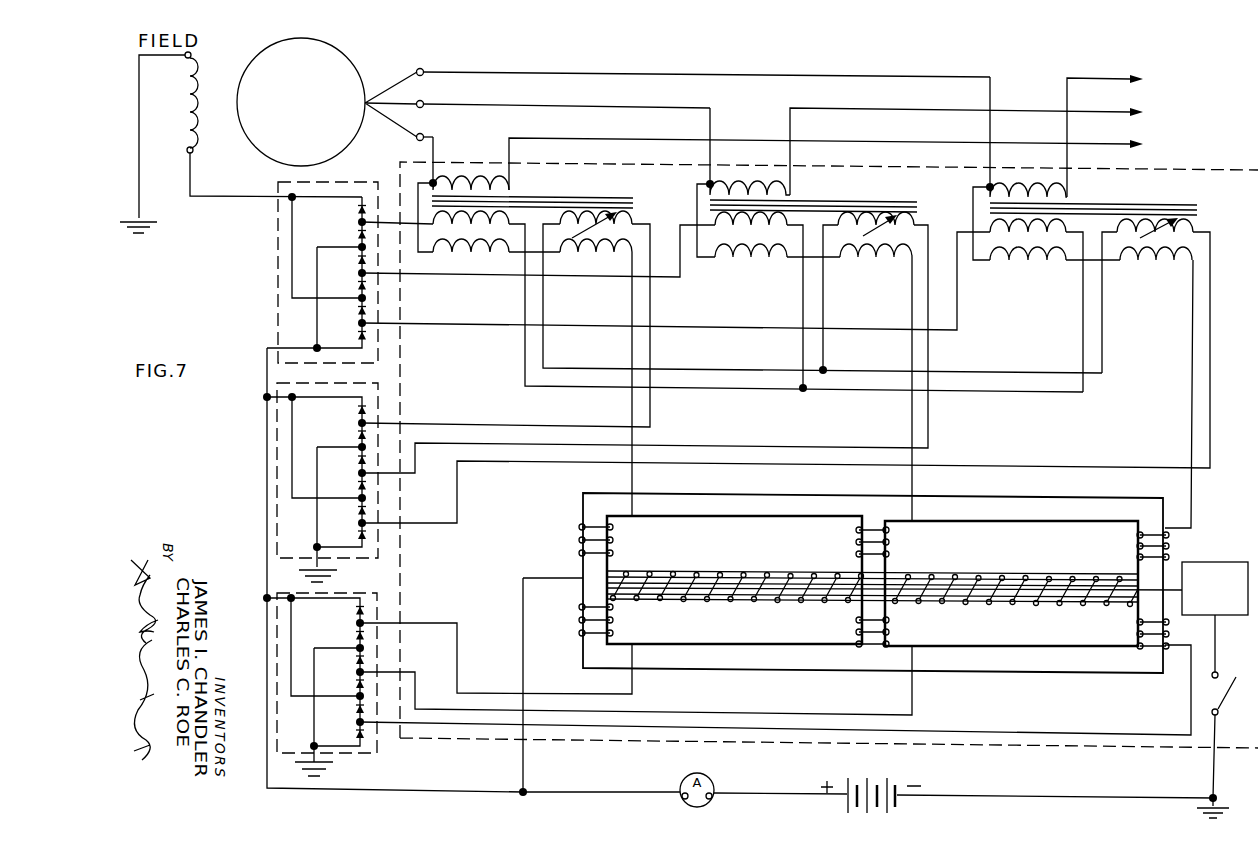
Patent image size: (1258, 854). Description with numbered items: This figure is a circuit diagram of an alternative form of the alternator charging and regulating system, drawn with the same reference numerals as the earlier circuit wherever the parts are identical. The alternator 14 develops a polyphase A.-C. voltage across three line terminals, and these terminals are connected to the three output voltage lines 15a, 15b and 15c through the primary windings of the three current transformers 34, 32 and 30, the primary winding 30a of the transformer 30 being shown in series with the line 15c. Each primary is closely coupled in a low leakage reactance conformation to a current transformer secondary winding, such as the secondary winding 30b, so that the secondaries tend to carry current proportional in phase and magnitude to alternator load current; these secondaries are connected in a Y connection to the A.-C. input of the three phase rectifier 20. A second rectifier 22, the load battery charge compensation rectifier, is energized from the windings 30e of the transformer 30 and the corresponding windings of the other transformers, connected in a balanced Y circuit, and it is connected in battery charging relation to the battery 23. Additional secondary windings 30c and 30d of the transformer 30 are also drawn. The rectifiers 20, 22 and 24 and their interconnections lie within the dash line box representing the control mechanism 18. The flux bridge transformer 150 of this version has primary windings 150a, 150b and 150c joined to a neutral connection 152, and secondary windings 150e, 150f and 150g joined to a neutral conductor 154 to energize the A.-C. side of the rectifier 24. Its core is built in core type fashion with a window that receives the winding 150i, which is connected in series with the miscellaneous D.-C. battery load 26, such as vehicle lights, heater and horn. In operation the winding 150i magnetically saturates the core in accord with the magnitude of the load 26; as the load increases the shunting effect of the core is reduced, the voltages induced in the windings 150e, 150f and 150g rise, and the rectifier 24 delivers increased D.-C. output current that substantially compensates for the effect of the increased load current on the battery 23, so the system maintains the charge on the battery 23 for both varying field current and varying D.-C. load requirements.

The alternator 14 is at (346, 62).
The output voltage line 15a is at (1104, 79).
The output voltage line 15b is at (1104, 115).
The output voltage line 15c is at (1104, 144).
The control mechanism 18 is at (455, 742).
The rectifier 20 is at (279, 260).
The rectifier 22 is at (279, 447).
The battery 23 is at (866, 780).
The rectifier 24 is at (349, 753).
The D.-C. battery load 26 is at (1231, 620).
The current transformer 30 is at (522, 207).
The current transformer primary winding 30a is at (465, 178).
The current transformer secondary winding 30b is at (483, 234).
The secondary winding 30c is at (454, 256).
The secondary winding 30d is at (593, 252).
The winding 30e is at (590, 230).
The current transformer 32 is at (798, 199).
The current transformer 34 is at (1073, 200).
The flux bridge transformer 150 is at (881, 583).
The primary winding 150a is at (579, 539).
The primary winding 150b is at (890, 537).
The primary winding 150c is at (1168, 540).
The secondary winding 150e is at (579, 614).
The secondary winding 150f is at (890, 622).
The secondary winding 150g is at (1138, 625).
The winding 150i is at (1107, 575).
The neutral connection 152 is at (644, 560).
The neutral conductor 154 is at (713, 606).